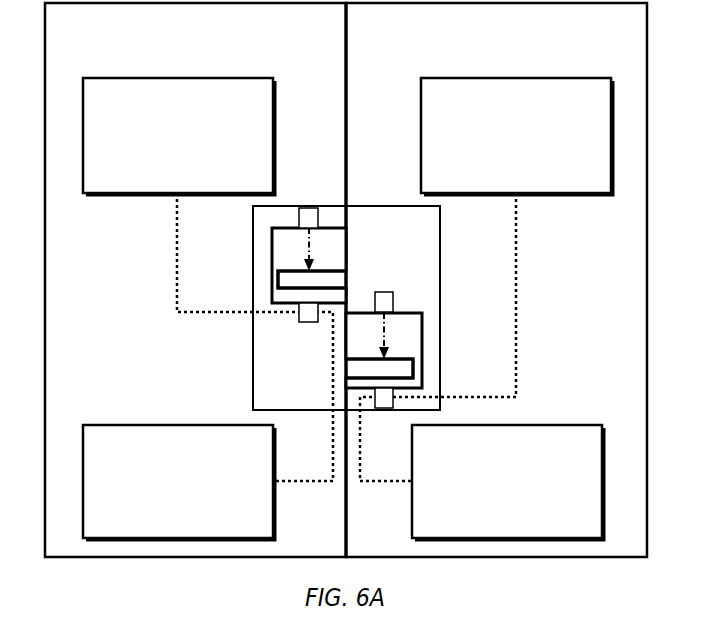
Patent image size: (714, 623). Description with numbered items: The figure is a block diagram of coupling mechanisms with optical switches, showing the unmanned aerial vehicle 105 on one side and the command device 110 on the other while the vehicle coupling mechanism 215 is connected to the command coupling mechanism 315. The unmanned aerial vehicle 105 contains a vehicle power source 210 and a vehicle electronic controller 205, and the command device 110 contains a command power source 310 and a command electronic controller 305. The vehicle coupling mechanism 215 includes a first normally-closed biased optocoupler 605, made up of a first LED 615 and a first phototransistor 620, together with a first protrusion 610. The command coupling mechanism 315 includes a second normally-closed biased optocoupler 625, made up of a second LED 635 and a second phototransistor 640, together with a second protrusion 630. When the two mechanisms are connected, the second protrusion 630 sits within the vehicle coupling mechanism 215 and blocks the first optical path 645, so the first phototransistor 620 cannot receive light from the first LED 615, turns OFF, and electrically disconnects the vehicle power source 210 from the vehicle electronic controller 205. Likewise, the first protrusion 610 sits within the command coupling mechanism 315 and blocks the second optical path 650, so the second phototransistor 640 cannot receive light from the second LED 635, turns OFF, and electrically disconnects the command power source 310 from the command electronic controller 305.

The unmanned aerial vehicle 105 is at (195, 280).
The command device 110 is at (496, 280).
The vehicle power source 210 is at (179, 136).
The command power source 310 is at (517, 136).
The vehicle electronic controller 205 is at (179, 482).
The command electronic controller 305 is at (508, 482).
The vehicle coupling mechanism 215 is at (257, 408).
The command coupling mechanism 315 is at (437, 208).
The first normally-closed biased optocoupler 605 is at (260, 237).
The first protrusion 610 is at (412, 373).
The first LED 615 is at (308, 208).
The first phototransistor 620 is at (308, 323).
The second normally-closed biased optocoupler 625 is at (434, 321).
The second protrusion 630 is at (282, 286).
The second LED 635 is at (384, 292).
The second phototransistor 640 is at (385, 409).
The first optical path 645 is at (332, 257).
The second optical path 650 is at (397, 331).